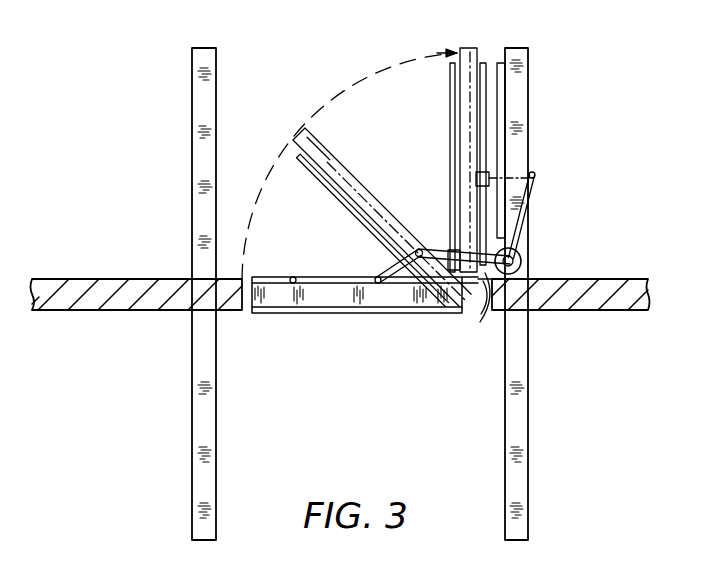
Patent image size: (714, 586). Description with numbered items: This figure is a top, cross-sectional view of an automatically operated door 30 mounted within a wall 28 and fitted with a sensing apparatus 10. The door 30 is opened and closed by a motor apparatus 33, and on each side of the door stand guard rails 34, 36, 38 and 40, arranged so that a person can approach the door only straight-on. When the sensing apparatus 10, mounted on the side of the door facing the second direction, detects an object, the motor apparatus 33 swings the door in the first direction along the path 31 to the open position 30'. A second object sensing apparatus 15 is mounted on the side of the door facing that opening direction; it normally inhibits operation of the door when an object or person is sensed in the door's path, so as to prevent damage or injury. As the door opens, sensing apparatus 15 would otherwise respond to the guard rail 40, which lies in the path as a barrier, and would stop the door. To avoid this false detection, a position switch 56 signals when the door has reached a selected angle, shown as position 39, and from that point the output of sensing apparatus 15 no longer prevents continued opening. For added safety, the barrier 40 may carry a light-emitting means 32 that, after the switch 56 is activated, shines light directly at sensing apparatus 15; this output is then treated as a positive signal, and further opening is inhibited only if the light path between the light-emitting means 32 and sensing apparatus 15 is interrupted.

The sensing apparatus 10 is at (365, 318).
The second object sensing apparatus 15 is at (302, 257).
The wall 28 is at (607, 283).
The door 30 is at (351, 322).
The open position of door 30' is at (462, 160).
The path 31 is at (360, 102).
The light-emitting means 32 is at (498, 112).
The motor apparatus 33 is at (526, 261).
The guard rail 34 is at (193, 422).
The guard rail 36 is at (528, 423).
The guard rail 38 is at (168, 294).
The selected angle position of door 39 is at (293, 137).
The guard rail (barrier) 40 is at (544, 294).
The position switch 56 is at (487, 318).